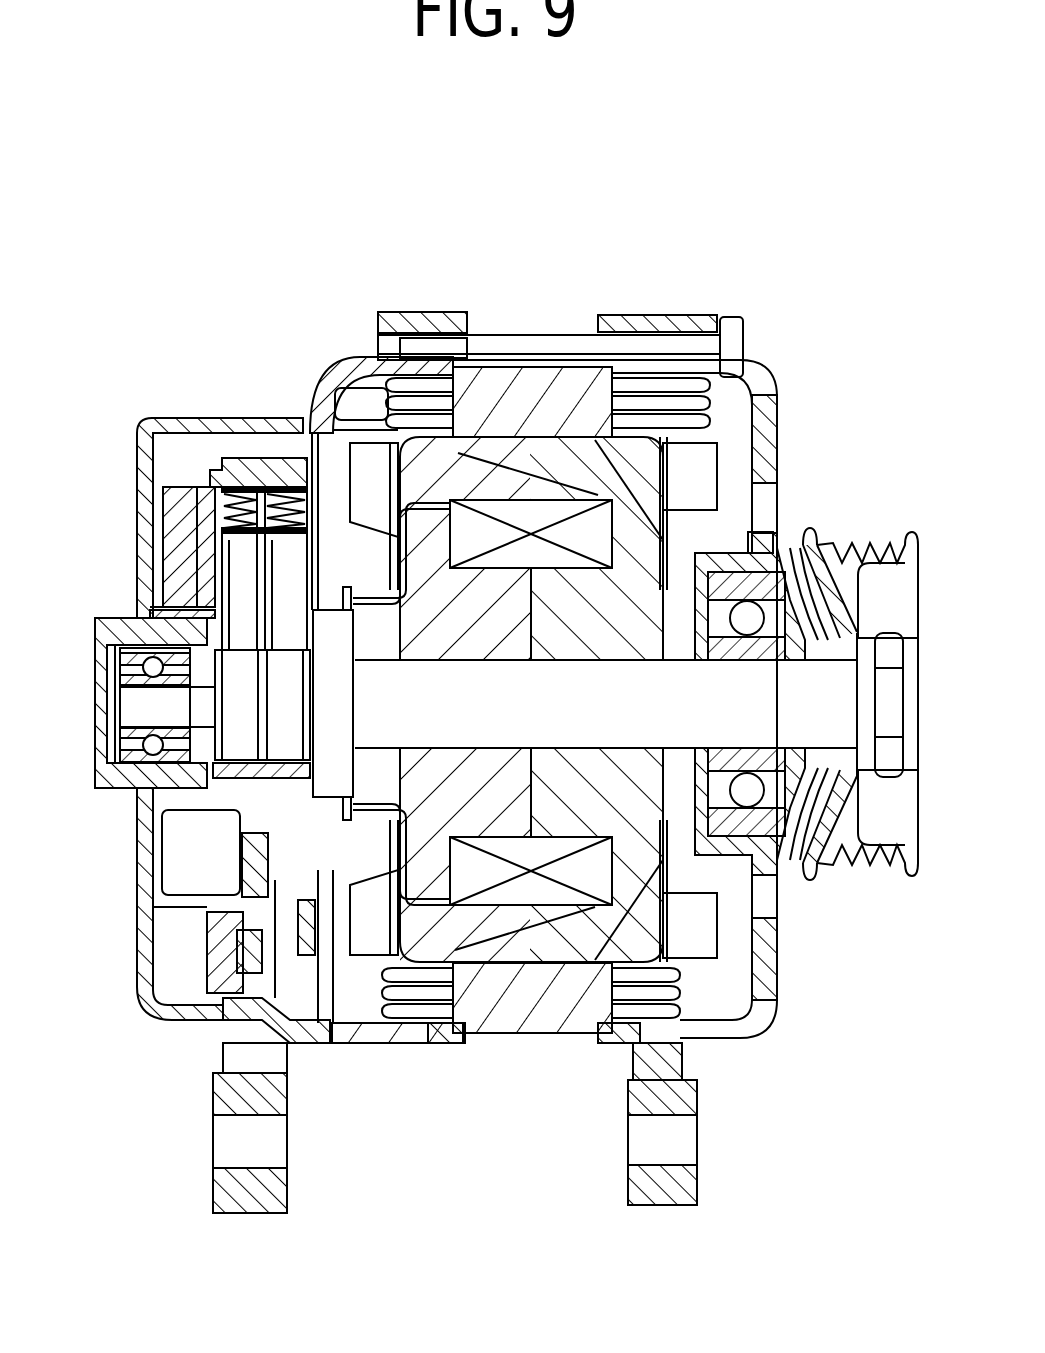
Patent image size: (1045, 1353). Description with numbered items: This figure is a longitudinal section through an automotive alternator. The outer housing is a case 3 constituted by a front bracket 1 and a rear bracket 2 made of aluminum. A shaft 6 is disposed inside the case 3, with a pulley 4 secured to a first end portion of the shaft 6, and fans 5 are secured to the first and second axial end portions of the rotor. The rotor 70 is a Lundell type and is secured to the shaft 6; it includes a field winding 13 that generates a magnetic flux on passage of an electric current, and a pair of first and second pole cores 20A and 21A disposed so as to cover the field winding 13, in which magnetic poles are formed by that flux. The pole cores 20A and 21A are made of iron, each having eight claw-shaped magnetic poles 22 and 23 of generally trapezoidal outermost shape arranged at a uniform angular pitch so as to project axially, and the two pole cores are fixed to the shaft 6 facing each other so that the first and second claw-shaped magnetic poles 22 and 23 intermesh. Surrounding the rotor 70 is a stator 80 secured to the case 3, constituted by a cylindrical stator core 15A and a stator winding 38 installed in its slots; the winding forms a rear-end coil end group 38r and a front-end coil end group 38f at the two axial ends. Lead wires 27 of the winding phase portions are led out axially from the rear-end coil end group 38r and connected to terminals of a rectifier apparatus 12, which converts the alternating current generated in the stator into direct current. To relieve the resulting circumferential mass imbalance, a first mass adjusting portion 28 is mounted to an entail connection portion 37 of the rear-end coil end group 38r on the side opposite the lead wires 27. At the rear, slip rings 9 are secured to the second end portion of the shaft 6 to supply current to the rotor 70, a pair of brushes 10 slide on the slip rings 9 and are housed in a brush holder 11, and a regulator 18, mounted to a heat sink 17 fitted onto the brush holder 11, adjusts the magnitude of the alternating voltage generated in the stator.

The front bracket 1 is at (783, 447).
The rear bracket 2 is at (142, 428).
The case 3 is at (785, 988).
The pulley 4 is at (877, 870).
The fans 5 is at (722, 928).
The shaft 6 is at (828, 722).
The slip rings 9 is at (287, 698).
The brushes 10 is at (287, 585).
The brush holder 11 is at (240, 467).
The rectifier apparatus 12 is at (220, 877).
The field winding 13 is at (538, 512).
The stator core 15A is at (507, 1023).
The heat sink 17 is at (173, 523).
The regulator 18 is at (207, 510).
The first pole core 20A is at (595, 463).
The second pole core 21A is at (467, 477).
The first claw-shaped magnetic poles 22 is at (630, 463).
The second claw-shaped magnetic poles 23 is at (440, 467).
The lead wires 27 is at (350, 998).
The first mass adjusting portion 28 is at (328, 395).
The entail connection portion 37 is at (362, 380).
The stator winding 38 is at (493, 1112).
The rear-end coil end group 38r is at (410, 1013).
The front-end coil end group 38f is at (702, 1040).
The rotor 70 is at (515, 578).
The stator 80 is at (452, 1092).